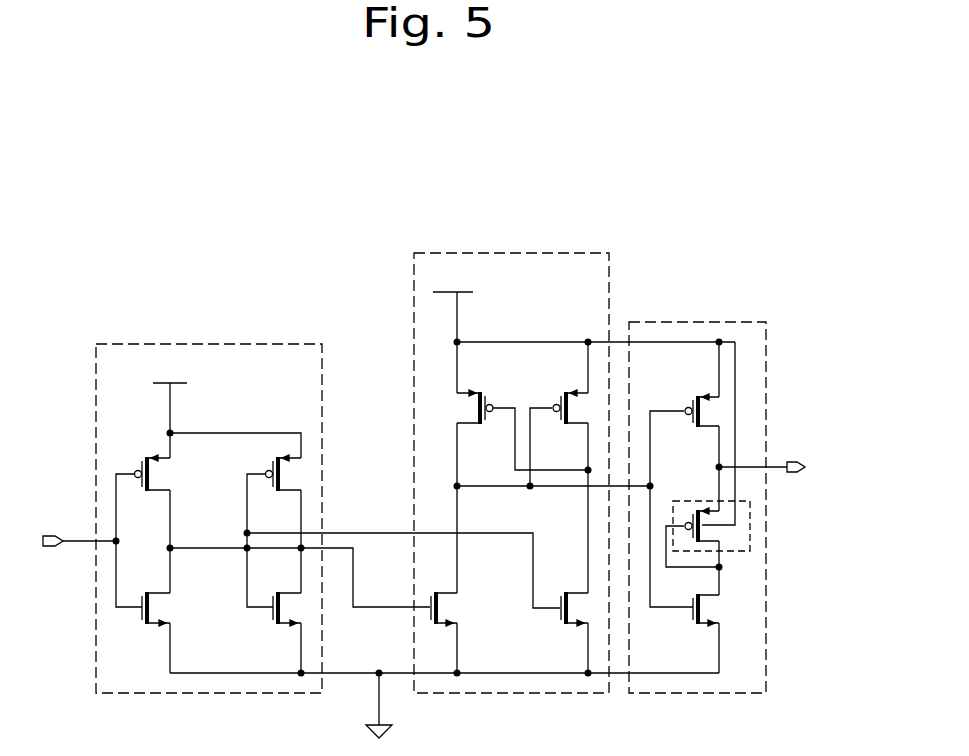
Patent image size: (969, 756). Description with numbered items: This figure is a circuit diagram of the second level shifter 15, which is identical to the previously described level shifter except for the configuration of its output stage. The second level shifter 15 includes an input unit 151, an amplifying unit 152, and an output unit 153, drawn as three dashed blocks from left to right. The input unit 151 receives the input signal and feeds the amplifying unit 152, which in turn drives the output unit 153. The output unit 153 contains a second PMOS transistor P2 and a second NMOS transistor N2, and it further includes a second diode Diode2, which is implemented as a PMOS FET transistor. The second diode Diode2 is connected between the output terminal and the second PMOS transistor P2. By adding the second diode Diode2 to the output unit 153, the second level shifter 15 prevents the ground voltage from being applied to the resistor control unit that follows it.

The second level shifter 15 is at (742, 163).
The input unit 151 is at (255, 343).
The amplifying unit 152 is at (560, 252).
The output unit 153 is at (705, 322).
The second PMOS transistor P2 is at (684, 498).
The second NMOS transistor N2 is at (691, 633).
The second diode Diode2 is at (752, 525).